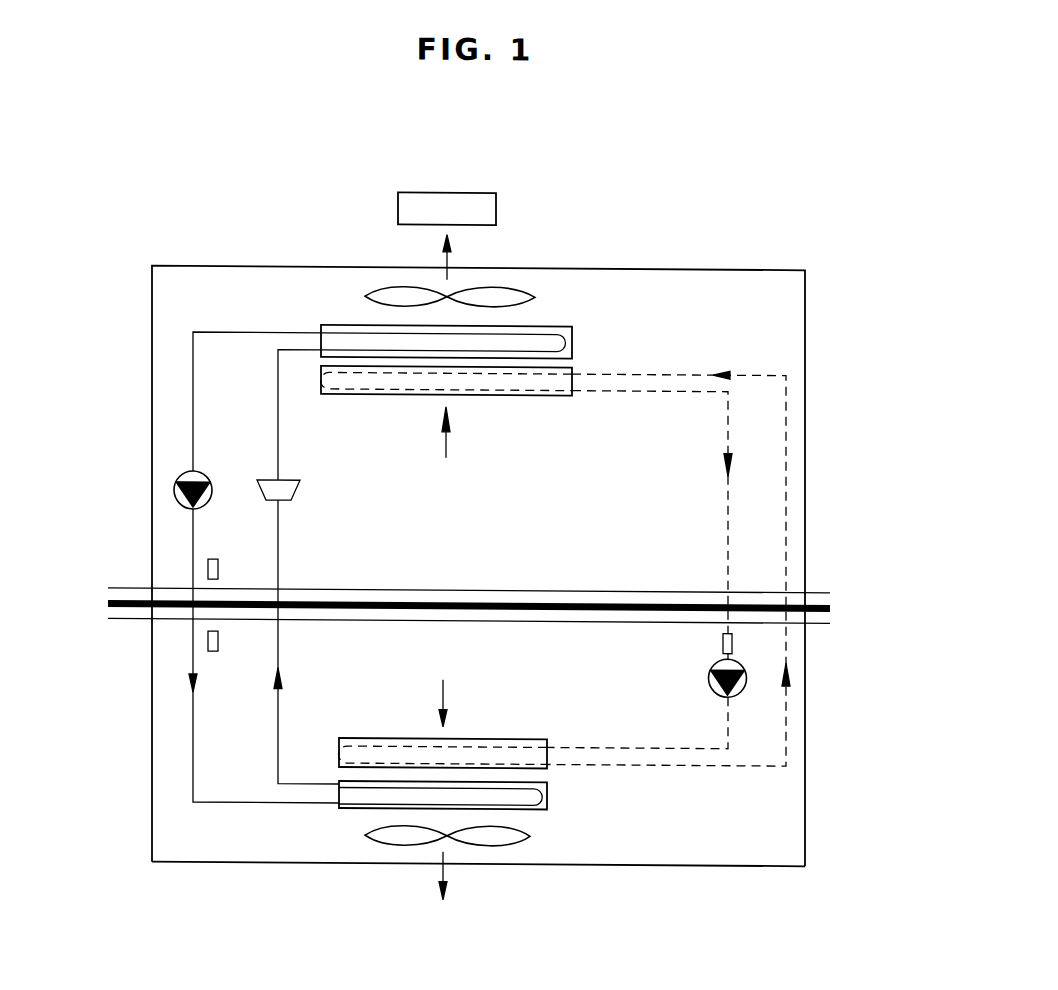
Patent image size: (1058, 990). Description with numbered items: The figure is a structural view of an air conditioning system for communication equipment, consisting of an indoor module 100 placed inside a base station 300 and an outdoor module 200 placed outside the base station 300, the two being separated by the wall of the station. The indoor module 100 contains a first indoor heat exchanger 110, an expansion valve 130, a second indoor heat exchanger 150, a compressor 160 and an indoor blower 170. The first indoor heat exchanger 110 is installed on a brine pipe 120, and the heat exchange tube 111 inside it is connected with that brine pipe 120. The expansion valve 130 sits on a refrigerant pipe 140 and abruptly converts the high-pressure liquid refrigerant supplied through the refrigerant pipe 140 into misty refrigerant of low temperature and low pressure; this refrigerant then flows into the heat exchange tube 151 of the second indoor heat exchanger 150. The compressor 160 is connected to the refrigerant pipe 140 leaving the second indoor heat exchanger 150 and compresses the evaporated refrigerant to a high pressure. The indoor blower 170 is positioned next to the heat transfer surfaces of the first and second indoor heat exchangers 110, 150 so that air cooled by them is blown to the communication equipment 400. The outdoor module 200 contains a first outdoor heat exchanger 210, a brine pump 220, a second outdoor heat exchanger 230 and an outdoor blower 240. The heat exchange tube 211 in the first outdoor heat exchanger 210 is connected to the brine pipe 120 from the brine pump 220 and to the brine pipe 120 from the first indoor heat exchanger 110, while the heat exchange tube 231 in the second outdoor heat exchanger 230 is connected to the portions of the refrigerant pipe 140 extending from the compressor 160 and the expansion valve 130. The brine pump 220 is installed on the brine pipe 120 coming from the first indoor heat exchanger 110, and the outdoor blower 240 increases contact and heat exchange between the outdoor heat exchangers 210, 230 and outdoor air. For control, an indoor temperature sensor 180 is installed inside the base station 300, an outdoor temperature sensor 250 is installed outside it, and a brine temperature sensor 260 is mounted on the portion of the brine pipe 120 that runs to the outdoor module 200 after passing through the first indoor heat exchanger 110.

The indoor module 100 is at (713, 268).
The first indoor heat exchanger 110 is at (573, 367).
The heat exchange tube 111 is at (508, 391).
The brine pipe 120 is at (687, 373).
The expansion valve 130 is at (263, 481).
The refrigerant pipe 140 is at (300, 349).
The second indoor heat exchanger 150 is at (342, 326).
The heat exchange tube 151 is at (447, 350).
The compressor 160 is at (182, 476).
The indoor blower 170 is at (506, 285).
The indoor temperature sensor 180 is at (208, 568).
The outdoor module 200 is at (760, 864).
The first outdoor heat exchanger 210 is at (640, 764).
The heat exchange tube 211 is at (515, 747).
The brine pump 220 is at (745, 690).
The second outdoor heat exchanger 230 is at (339, 794).
The heat exchange tube 231 is at (388, 806).
The outdoor blower 240 is at (500, 840).
The outdoor temperature sensor 250 is at (208, 641).
The brine temperature sensor 260 is at (733, 642).
The base station 300 is at (752, 165).
The communication equipment 400 is at (468, 193).